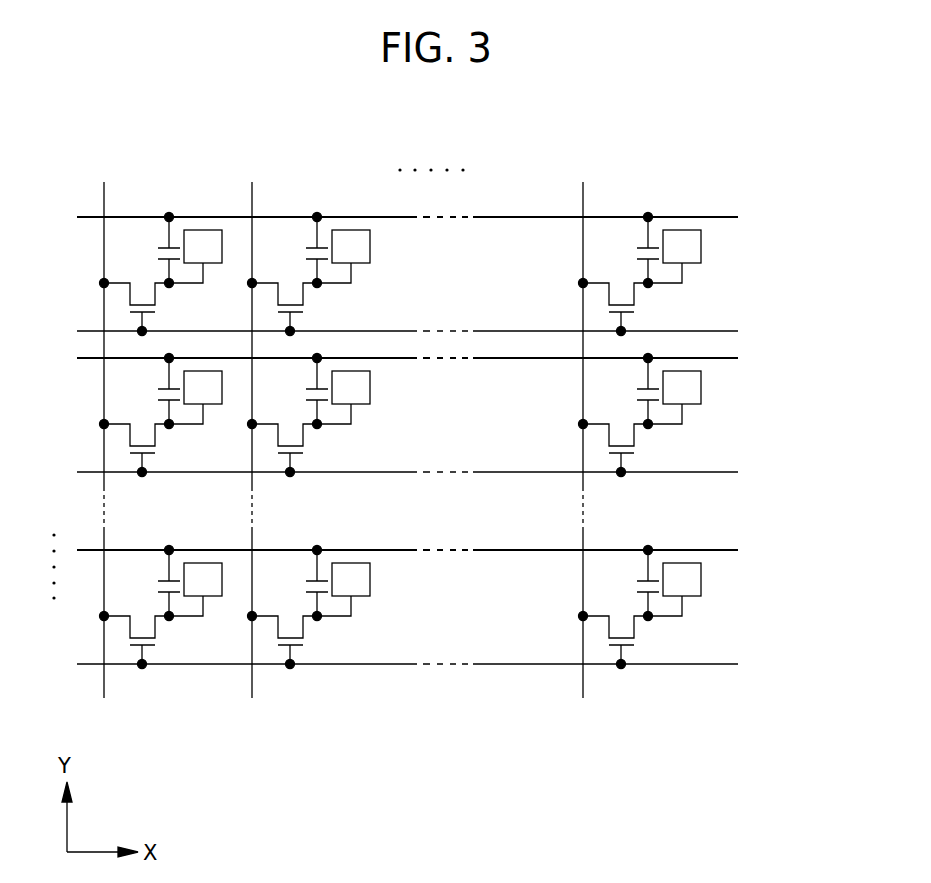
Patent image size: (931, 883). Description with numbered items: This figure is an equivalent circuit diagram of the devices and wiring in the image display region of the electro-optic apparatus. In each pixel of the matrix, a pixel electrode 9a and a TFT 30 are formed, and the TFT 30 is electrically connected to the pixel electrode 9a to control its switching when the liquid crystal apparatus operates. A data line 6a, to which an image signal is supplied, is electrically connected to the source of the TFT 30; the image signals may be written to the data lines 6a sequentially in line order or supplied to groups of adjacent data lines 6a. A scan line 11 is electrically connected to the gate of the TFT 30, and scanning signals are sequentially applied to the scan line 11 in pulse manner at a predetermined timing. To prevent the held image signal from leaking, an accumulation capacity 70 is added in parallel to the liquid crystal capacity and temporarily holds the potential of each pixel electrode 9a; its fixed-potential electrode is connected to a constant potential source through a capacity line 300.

The data line 6a is at (104, 196).
The capacity line 300 is at (735, 219).
The scan line 11 is at (726, 331).
The accumulation capacity 70 is at (156, 257).
The TFT 30 is at (124, 298).
The pixel electrode 9a is at (701, 252).